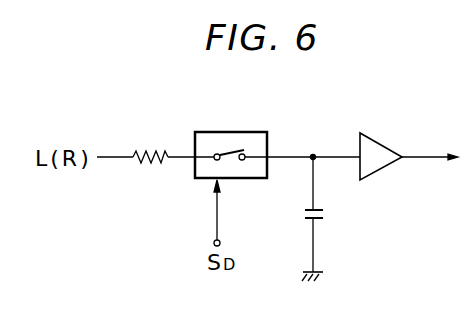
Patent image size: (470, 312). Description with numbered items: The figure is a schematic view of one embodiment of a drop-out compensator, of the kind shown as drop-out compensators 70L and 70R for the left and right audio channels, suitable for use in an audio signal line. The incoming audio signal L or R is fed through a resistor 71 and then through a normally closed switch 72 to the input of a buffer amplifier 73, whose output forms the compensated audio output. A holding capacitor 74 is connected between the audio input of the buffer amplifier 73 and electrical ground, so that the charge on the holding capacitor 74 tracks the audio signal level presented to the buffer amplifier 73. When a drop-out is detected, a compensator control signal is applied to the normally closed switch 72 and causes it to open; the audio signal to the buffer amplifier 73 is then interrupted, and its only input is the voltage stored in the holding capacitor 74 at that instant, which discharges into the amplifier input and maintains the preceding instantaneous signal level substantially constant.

The drop-out compensator 70L is at (220, 100).
The drop-out compensator 70R is at (312, 100).
The resistor 71 is at (149, 148).
The normally closed switch 72 is at (236, 131).
The buffer amplifier 73 is at (379, 143).
The holding capacitor 74 is at (325, 214).